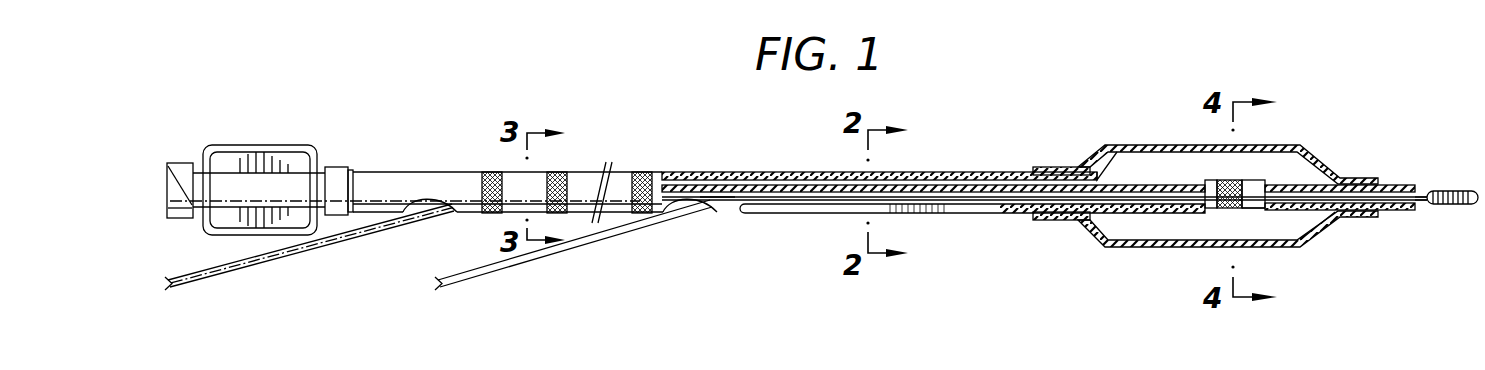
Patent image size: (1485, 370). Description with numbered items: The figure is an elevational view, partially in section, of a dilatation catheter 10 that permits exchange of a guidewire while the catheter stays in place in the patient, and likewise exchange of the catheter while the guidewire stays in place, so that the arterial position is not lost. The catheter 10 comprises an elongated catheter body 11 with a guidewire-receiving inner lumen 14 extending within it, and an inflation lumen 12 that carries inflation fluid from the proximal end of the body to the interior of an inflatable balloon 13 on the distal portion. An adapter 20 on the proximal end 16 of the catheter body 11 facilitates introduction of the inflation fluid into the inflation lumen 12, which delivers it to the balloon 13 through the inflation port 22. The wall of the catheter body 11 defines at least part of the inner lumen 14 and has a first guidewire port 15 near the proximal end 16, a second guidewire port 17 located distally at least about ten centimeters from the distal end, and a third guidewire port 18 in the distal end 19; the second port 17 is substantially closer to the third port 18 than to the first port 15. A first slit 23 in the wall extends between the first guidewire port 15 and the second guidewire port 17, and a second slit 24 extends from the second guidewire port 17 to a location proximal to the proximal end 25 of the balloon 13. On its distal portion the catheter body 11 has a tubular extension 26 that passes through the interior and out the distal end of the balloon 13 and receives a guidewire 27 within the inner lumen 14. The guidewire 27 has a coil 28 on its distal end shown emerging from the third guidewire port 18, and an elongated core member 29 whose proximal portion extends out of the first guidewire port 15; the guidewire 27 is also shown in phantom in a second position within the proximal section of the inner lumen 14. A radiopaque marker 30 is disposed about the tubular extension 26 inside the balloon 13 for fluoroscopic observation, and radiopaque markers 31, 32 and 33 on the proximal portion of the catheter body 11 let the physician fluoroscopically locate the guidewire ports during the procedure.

The dilatation catheter 10 is at (960, 152).
The catheter body 11 is at (737, 172).
The inflation lumen 12 is at (843, 184).
The inflatable balloon 13 is at (1300, 147).
The guidewire-receiving inner lumen 14 is at (1020, 220).
The first guidewire port 15 is at (425, 205).
The proximal end 16 is at (353, 172).
The second guidewire port 17 is at (712, 203).
The third guidewire port 18 is at (1420, 186).
The distal end 19 is at (1392, 211).
The adapter 20 is at (276, 158).
The inflation port 22 is at (1100, 180).
The first slit 23 is at (668, 212).
The second slit 24 is at (935, 214).
The proximal end of the balloon 25 is at (1043, 167).
The tubular extension 26 is at (1245, 210).
The guidewire 27 is at (257, 265).
The coil 28 is at (1440, 191).
The elongated core member 29 is at (358, 237).
The radiopaque marker 30 is at (1230, 180).
The radiopaque marker 31 is at (493, 172).
The radiopaque marker 32 is at (557, 172).
The radiopaque marker 33 is at (643, 172).